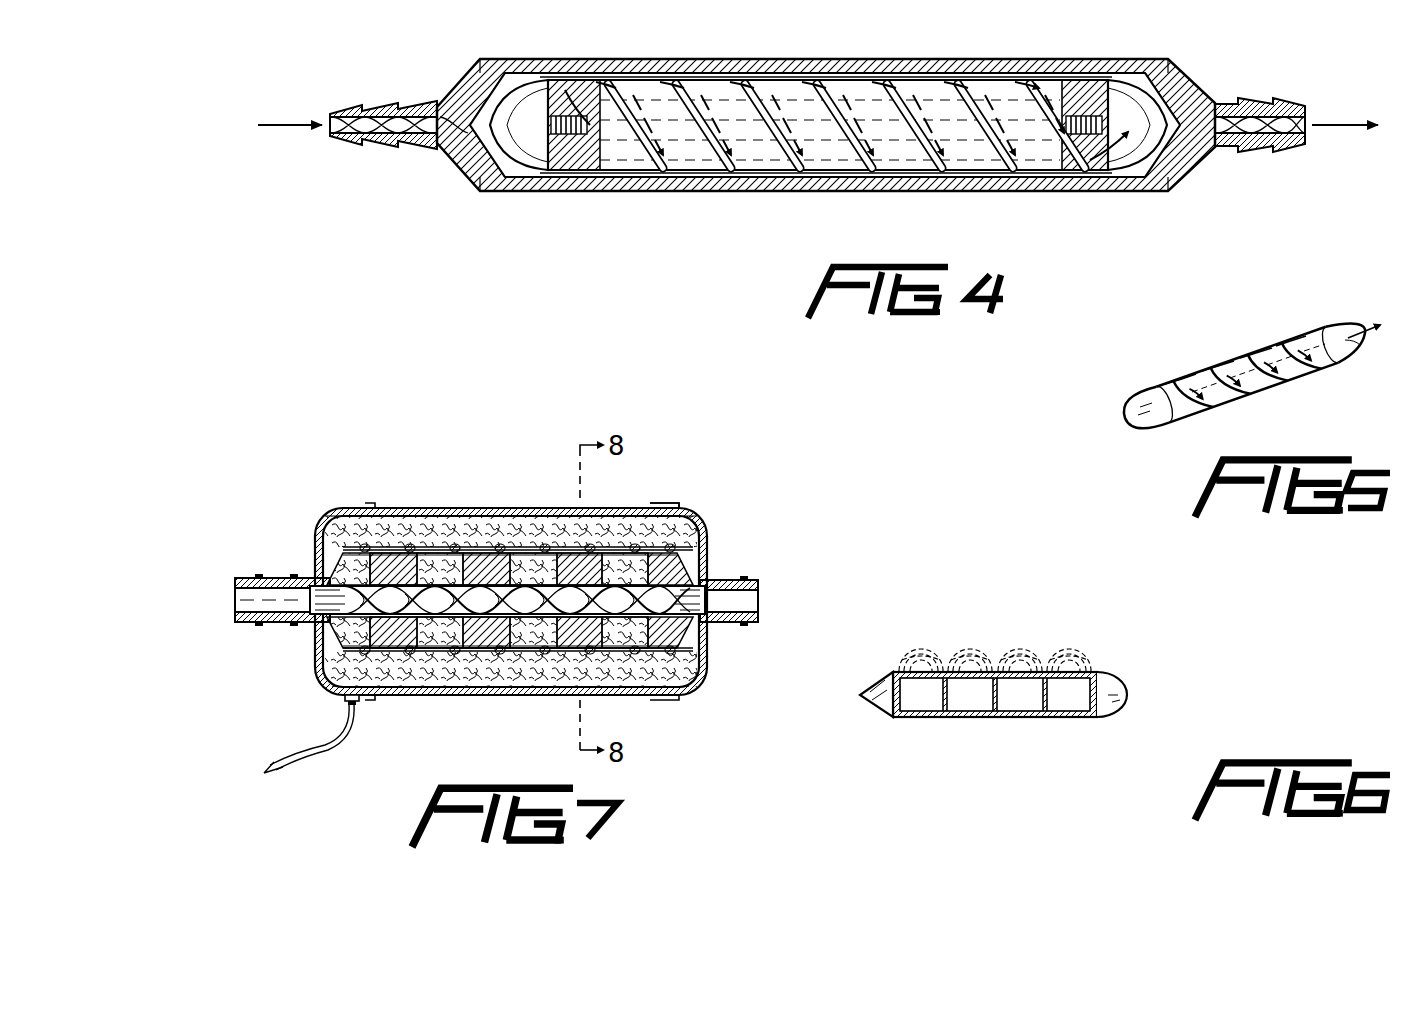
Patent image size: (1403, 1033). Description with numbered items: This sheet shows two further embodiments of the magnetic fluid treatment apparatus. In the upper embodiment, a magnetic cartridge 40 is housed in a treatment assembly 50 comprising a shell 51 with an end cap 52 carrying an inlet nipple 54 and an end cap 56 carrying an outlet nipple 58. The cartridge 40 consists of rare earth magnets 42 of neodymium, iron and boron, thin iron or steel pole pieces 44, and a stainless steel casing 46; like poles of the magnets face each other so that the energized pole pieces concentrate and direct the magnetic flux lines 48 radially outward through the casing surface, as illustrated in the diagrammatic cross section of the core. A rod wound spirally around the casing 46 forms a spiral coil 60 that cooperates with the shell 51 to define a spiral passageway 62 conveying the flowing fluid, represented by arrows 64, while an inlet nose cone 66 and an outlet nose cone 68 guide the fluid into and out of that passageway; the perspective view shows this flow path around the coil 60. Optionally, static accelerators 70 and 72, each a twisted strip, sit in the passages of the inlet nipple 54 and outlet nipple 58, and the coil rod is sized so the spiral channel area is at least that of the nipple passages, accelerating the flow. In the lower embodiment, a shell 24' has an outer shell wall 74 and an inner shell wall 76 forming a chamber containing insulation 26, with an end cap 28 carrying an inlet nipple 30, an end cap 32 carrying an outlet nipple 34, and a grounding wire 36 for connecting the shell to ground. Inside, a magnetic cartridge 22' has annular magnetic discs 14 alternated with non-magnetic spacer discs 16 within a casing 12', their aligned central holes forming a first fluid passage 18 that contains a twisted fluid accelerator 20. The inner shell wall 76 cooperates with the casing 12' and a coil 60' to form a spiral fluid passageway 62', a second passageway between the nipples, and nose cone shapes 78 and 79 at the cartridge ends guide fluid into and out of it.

In FIG. 7, the casing 12' is at (515, 530).
In FIG. 7, the annular magnetic discs 14 is at (445, 565).
In FIG. 7, the annular spacer discs 16 is at (400, 565).
In FIG. 7, the fluid passage 18 is at (345, 688).
In FIG. 7, the fluid accelerator 20 is at (320, 623).
In FIG. 7, the magnetic cartridge 22' is at (516, 636).
In FIG. 7, the shell 24' is at (518, 530).
In FIG. 7, the insulating material 26 is at (340, 528).
In FIG. 7, the end cap 28 is at (338, 506).
In FIG. 7, the inlet nipple 30 is at (262, 578).
In FIG. 7, the end cap 32 is at (678, 506).
In FIG. 7, the outlet nipple 34 is at (745, 578).
In FIG. 7, the grounding wire 36 is at (318, 742).
In FIG. 4, the magnetic cartridge 40 is at (755, 142).
In FIG. 6, the magnetic cartridge 40 is at (975, 605).
In FIG. 6, the magnets 42 is at (908, 718).
In FIG. 6, the pole pieces 44 is at (943, 718).
In FIG. 4, the casing 46 is at (966, 166).
In FIG. 5, the casing 46 is at (1295, 378).
In FIG. 6, the casing 46 is at (945, 672).
In FIG. 6, the magnetic flux lines 48 is at (980, 670).
In FIG. 4, the treatment assembly 50 is at (628, 206).
In FIG. 4, the shell 51 is at (772, 194).
In FIG. 4, the end cap 52 is at (492, 152).
In FIG. 4, the inlet nipple 54 is at (362, 150).
In FIG. 4, the end cap 56 is at (1158, 170).
In FIG. 4, the outlet nipple 58 is at (1240, 100).
In FIG. 4, the spiral coil 60 is at (846, 159).
In FIG. 5, the spiral coil 60 is at (1249, 344).
In FIG. 7, the coil 60' is at (517, 662).
In FIG. 4, the spiral passageway 62 is at (826, 86).
In FIG. 7, the spiral fluid passageway 62' is at (510, 554).
In FIG. 4, the arrows 64 is at (660, 96).
In FIG. 5, the arrows 64 is at (1180, 388).
In FIG. 4, the inlet nose cone 66 is at (524, 142).
In FIG. 5, the inlet nose cone 66 is at (1135, 410).
In FIG. 6, the inlet nose cone 66 is at (860, 694).
In FIG. 4, the outlet nose cone 68 is at (1125, 132).
In FIG. 5, the outlet nose cone 68 is at (1338, 330).
In FIG. 6, the outlet nose cone 68 is at (1120, 675).
In FIG. 4, the static accelerator 70 is at (432, 137).
In FIG. 4, the static accelerator 72 is at (1250, 137).
In FIG. 7, the outer shell wall 74 is at (515, 518).
In FIG. 7, the inner shell wall 76 is at (488, 548).
In FIG. 7, the nose cone shape 78 is at (345, 562).
In FIG. 7, the nose cone shape 79 is at (680, 557).